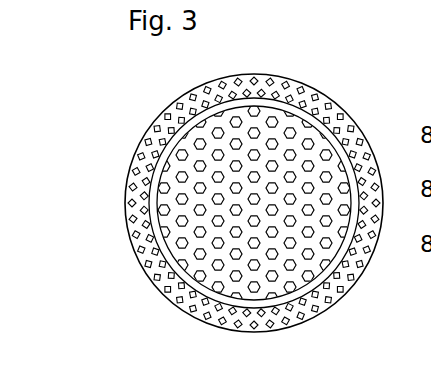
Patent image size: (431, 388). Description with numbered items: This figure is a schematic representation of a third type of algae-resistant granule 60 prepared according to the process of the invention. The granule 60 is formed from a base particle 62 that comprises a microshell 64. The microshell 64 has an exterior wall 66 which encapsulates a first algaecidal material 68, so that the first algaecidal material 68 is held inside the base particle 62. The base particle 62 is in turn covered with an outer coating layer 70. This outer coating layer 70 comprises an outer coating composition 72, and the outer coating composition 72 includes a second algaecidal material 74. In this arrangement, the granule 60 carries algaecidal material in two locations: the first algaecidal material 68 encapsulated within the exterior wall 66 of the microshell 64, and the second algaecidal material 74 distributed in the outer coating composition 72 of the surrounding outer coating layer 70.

The algae-resistant granule 60 is at (129, 107).
The base particle 62 is at (142, 163).
The microshell 64 is at (143, 202).
The exterior wall 66 is at (155, 230).
The first algaecidal material 68 is at (233, 252).
The outer coating layer 70 is at (200, 322).
The outer coating composition 72 is at (285, 325).
The second algaecidal material 74 is at (347, 278).